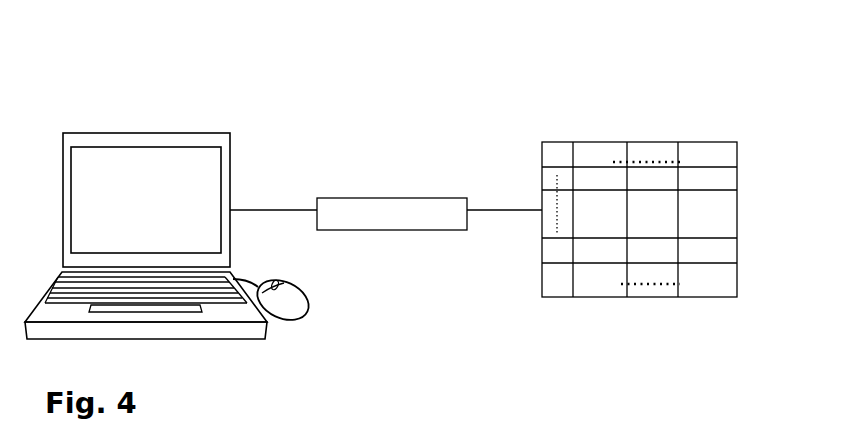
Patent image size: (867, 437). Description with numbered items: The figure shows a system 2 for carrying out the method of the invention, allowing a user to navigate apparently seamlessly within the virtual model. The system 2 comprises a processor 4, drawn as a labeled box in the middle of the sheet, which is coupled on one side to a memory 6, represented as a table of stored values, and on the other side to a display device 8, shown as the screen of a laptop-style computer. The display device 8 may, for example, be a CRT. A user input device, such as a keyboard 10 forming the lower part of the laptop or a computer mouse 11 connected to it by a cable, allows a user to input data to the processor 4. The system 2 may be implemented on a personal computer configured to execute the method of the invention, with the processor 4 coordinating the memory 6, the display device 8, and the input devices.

The system 2 is at (313, 84).
The processor 4 is at (457, 203).
The memory 6 is at (730, 153).
The display device 8 is at (92, 132).
The keyboard 10 is at (68, 293).
The computer mouse 11 is at (300, 303).